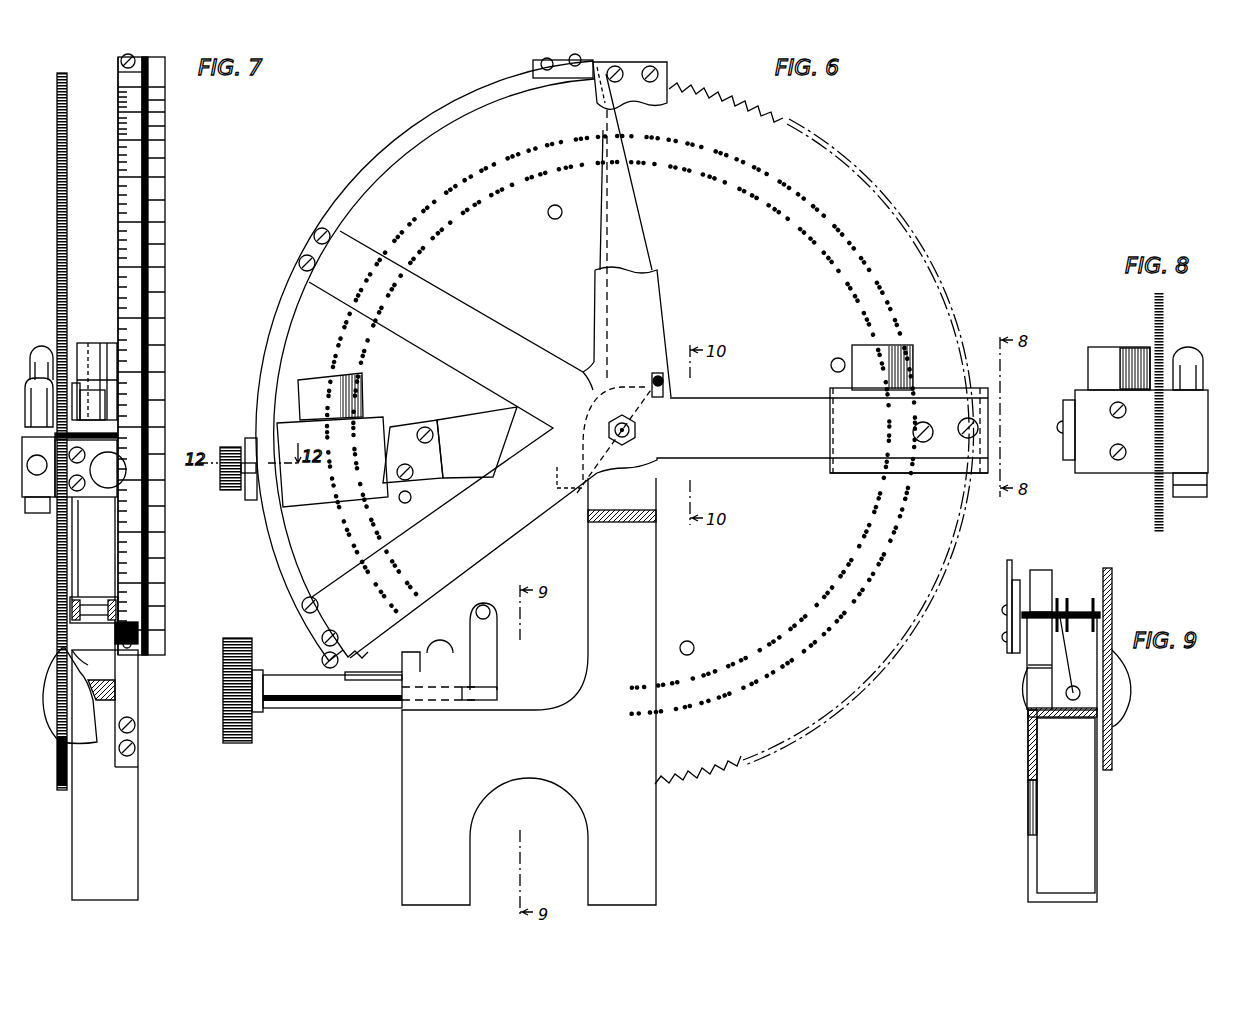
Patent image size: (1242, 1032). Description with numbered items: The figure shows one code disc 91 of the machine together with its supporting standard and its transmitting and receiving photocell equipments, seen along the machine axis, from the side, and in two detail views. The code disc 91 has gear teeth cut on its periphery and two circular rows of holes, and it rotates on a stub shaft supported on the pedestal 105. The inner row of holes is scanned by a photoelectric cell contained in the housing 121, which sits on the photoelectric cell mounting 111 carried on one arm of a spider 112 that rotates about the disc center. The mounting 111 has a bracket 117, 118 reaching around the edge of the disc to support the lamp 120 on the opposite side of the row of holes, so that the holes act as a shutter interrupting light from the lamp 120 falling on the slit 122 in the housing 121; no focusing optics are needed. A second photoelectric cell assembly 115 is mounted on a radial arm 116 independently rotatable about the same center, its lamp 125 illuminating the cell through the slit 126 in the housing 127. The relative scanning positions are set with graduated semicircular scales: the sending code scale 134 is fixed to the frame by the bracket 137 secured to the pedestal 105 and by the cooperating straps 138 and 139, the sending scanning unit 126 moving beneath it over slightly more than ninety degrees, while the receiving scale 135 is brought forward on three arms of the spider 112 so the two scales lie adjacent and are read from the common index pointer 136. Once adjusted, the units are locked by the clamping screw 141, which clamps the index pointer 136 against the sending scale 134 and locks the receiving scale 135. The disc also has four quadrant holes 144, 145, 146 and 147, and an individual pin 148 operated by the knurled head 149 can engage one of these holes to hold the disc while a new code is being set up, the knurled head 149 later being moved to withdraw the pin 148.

In FIG. 6, the code disc 91 is at (930, 277).
In FIG. 9, the code disc 91 is at (1112, 585).
In FIG. 6, the pedestal 105 is at (647, 837).
In FIG. 9, the pedestal 105 is at (1028, 745).
In FIG. 6, the photoelectric cell mounting 111 is at (930, 393).
In FIG. 6, the spider 112 is at (767, 453).
In FIG. 6, the second photoelectric cell assembly 115 is at (327, 493).
In FIG. 6, the radial arm 116 is at (463, 417).
In FIG. 6, the bracket 117 is at (953, 467).
In FIG. 8, the bracket 118 is at (1113, 467).
In FIG. 7, the lamp 120 is at (42, 345).
In FIG. 8, the lamp 120 is at (1185, 350).
In FIG. 7, the photoelectric cell housing 121 is at (100, 365).
In FIG. 6, the photoelectric cell housing 121 is at (870, 345).
In FIG. 8, the photoelectric cell housing 121 is at (1095, 350).
In FIG. 8, the slit 122 is at (1130, 380).
In FIG. 7, the lamp 125 is at (30, 385).
In FIG. 7, the slit 126 is at (86, 345).
In FIG. 7, the housing 127 is at (100, 403).
In FIG. 6, the housing 127 is at (356, 395).
In FIG. 7, the sending code scale 134 is at (118, 135).
In FIG. 7, the receiving scale 135 is at (160, 127).
In FIG. 6, the receiving scale 135 is at (405, 143).
In FIG. 9, the receiving scale 135 is at (1005, 617).
In FIG. 7, the index pointer 136 is at (127, 475).
In FIG. 6, the bracket 137 is at (638, 250).
In FIG. 6, the strap 138 is at (620, 123).
In FIG. 6, the strap 139 is at (390, 677).
In FIG. 7, the clamping screw 141 is at (108, 482).
In FIG. 6, the quadrant hole 144 is at (553, 216).
In FIG. 6, the quadrant hole 145 is at (832, 362).
In FIG. 6, the quadrant hole 146 is at (691, 645).
In FIG. 6, the quadrant hole 147 is at (403, 503).
In FIG. 7, the pin 148 is at (87, 603).
In FIG. 6, the pin 148 is at (498, 575).
In FIG. 9, the pin 148 is at (1040, 610).
In FIG. 7, the knurled head 149 is at (53, 720).
In FIG. 6, the knurled head 149 is at (222, 720).
In FIG. 9, the knurled head 149 is at (1118, 712).